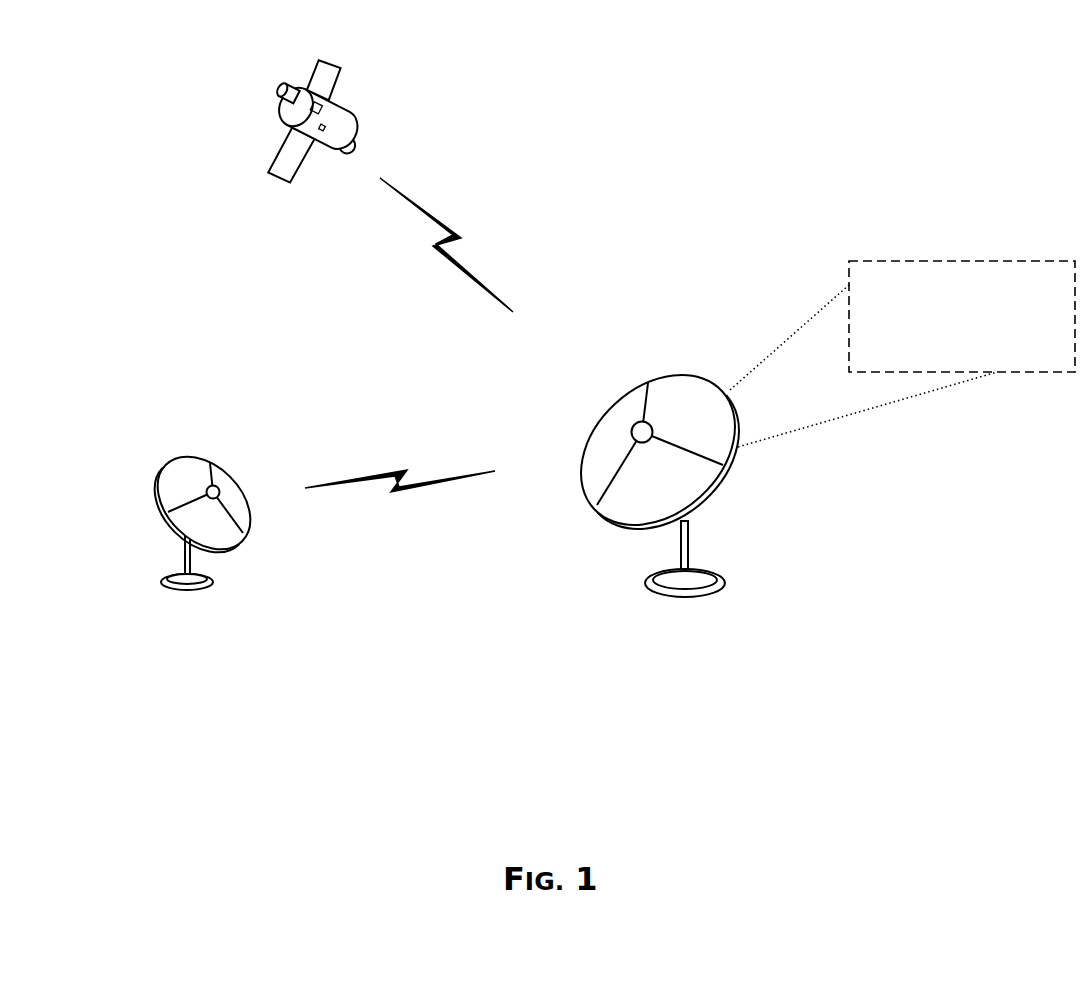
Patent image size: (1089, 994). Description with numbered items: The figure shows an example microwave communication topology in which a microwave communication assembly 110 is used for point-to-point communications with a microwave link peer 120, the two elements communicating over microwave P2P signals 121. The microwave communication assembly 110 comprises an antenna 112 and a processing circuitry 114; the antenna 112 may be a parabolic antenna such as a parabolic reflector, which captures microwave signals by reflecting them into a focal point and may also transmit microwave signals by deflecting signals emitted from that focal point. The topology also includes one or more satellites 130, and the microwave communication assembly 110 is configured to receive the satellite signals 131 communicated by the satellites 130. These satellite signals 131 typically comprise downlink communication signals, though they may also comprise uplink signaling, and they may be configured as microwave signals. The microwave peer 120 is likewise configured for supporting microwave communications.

The microwave communication assembly 110 is at (680, 516).
The antenna 112 is at (677, 386).
The processing circuitry 114 is at (978, 338).
The microwave link peer 120 is at (210, 655).
The microwave P2P signals 121 is at (426, 571).
The satellite 130 is at (228, 151).
The satellite signals 131 is at (547, 244).